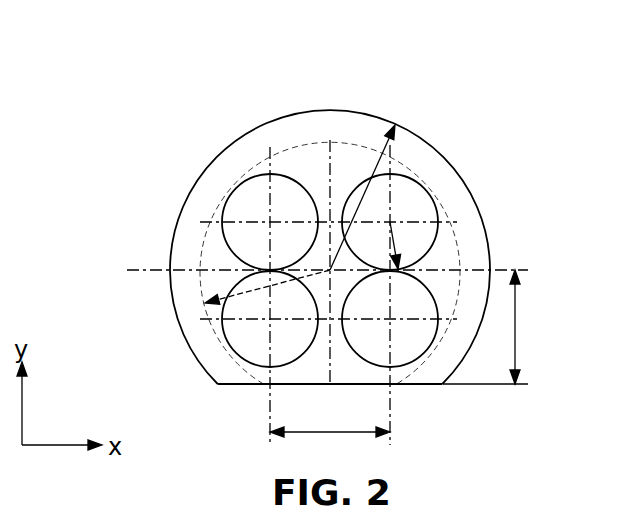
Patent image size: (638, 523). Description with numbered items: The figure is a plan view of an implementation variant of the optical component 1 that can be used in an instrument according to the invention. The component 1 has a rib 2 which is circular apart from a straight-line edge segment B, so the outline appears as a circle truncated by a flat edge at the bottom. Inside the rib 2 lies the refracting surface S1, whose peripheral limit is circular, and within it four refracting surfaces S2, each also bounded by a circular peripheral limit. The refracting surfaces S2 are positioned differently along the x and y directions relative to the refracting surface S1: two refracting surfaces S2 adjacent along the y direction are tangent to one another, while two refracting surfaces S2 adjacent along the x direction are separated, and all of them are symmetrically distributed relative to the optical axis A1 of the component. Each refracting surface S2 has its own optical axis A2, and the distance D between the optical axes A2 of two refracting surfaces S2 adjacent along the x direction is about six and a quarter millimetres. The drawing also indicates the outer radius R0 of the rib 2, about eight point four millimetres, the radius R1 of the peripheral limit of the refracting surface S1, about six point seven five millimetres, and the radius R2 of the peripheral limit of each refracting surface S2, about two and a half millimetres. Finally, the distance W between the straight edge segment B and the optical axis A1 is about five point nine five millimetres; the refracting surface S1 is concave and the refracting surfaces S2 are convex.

The optical component 1 is at (507, 102).
The rib 2 is at (278, 128).
The straight-line edge segment B is at (237, 386).
The refracting surface S1 is at (314, 178).
The refracting surfaces S2 is at (520, 248).
The optical axis A1 is at (330, 270).
The optical axes A2 is at (430, 413).
The outer radius R0 is at (377, 160).
The radius of the peripheral limit of the refracting surface S1 R1 is at (212, 301).
The radius of the peripheral limit of each refracting surface S2 R2 is at (411, 245).
The distance between the optical axes D is at (330, 419).
The distance between the straight edge segment and the optical axis W is at (495, 327).